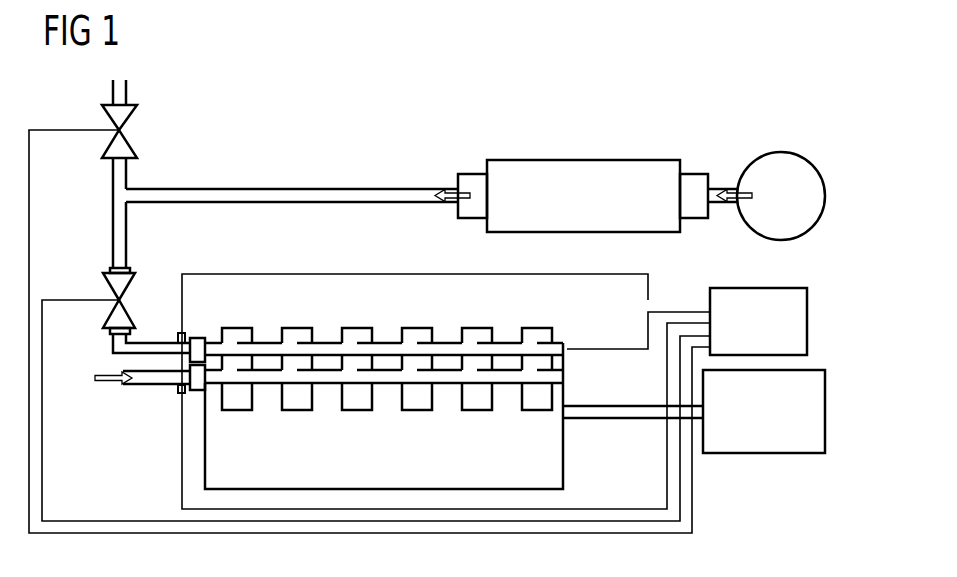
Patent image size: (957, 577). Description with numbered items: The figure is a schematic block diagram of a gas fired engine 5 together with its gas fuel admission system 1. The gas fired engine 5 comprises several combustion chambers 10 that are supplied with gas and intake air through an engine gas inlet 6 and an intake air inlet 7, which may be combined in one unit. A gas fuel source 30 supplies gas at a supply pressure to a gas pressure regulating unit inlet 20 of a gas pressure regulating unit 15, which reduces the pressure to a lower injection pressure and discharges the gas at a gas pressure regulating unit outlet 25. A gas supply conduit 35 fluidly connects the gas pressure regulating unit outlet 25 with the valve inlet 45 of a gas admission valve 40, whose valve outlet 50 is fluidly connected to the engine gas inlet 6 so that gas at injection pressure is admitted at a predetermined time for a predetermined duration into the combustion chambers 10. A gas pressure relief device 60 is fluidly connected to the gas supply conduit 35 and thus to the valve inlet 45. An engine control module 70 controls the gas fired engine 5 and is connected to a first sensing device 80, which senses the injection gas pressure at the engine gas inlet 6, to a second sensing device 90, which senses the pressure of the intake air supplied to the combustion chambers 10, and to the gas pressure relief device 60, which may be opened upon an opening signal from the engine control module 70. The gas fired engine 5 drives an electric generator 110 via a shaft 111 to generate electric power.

The gas fuel admission system 1 is at (360, 116).
The gas fired engine 5 is at (446, 391).
The engine gas inlet 6 is at (198, 338).
The intake air inlet 7 is at (198, 392).
The combustion chamber 10 is at (243, 408).
The gas pressure regulating unit 15 is at (578, 170).
The gas pressure regulating unit inlet 20 is at (696, 180).
The gas pressure regulating unit outlet 25 is at (472, 178).
The gas fuel source 30 is at (784, 159).
The gas supply conduit 35 is at (245, 189).
The gas admission valve 40 is at (105, 316).
The valve inlet 45 is at (108, 270).
The valve outlet 50 is at (111, 333).
The gas pressure relief device 60 is at (105, 143).
The engine control module 70 is at (728, 288).
The first sensing device 80 is at (178, 336).
The second sensing device 90 is at (178, 387).
The electric generator 110 is at (758, 454).
The shaft 111 is at (610, 406).